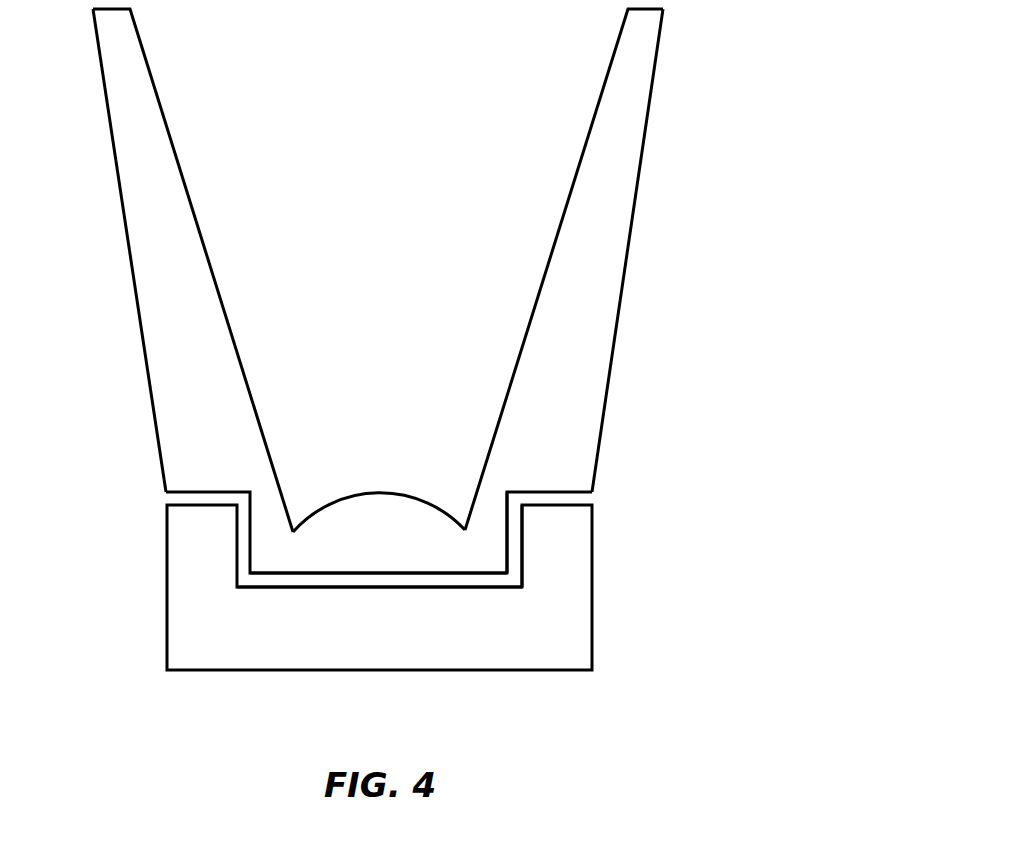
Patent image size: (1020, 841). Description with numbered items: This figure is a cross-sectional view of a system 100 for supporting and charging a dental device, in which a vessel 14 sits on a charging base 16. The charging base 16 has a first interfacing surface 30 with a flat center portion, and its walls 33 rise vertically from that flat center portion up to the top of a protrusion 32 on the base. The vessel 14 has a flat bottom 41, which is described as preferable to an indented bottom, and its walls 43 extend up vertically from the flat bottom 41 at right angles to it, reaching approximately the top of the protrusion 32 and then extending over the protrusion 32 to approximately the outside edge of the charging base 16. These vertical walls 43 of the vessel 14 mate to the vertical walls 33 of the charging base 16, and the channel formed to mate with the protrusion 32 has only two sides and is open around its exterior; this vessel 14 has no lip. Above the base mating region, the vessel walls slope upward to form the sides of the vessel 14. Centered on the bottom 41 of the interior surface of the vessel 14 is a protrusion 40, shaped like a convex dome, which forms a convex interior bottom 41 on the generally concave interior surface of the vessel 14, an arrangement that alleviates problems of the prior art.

The system 100 is at (720, 136).
The vessel 14 is at (124, 216).
The charging base 16 is at (167, 593).
The first interfacing surface 30 is at (470, 588).
The protrusion 32 is at (560, 505).
The walls 33 is at (523, 547).
The protrusion 40 is at (388, 497).
The bottom 41 is at (333, 573).
The walls 43 is at (505, 510).